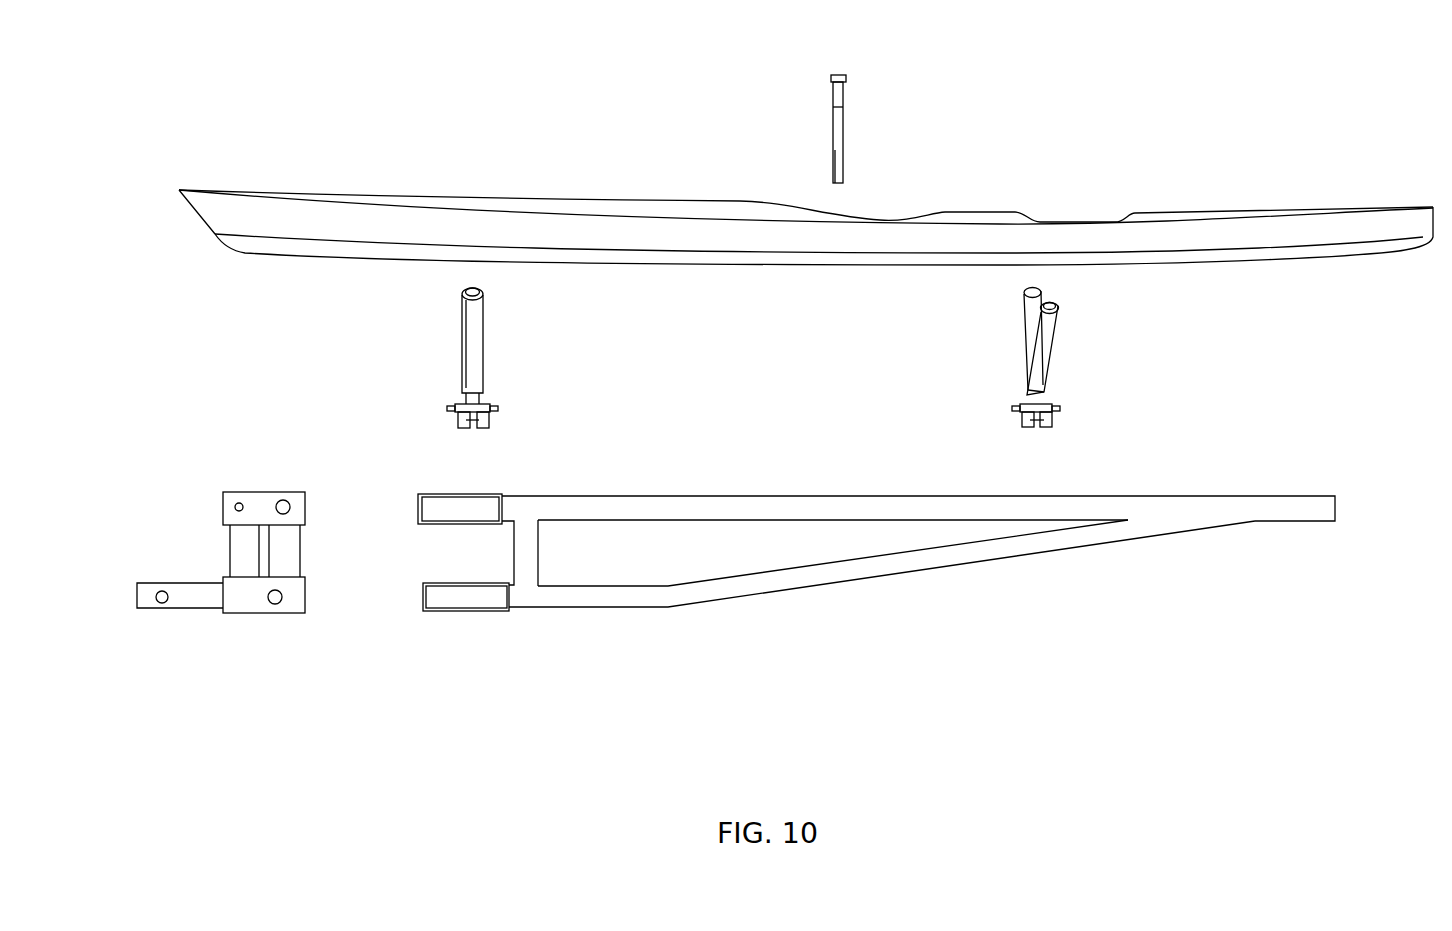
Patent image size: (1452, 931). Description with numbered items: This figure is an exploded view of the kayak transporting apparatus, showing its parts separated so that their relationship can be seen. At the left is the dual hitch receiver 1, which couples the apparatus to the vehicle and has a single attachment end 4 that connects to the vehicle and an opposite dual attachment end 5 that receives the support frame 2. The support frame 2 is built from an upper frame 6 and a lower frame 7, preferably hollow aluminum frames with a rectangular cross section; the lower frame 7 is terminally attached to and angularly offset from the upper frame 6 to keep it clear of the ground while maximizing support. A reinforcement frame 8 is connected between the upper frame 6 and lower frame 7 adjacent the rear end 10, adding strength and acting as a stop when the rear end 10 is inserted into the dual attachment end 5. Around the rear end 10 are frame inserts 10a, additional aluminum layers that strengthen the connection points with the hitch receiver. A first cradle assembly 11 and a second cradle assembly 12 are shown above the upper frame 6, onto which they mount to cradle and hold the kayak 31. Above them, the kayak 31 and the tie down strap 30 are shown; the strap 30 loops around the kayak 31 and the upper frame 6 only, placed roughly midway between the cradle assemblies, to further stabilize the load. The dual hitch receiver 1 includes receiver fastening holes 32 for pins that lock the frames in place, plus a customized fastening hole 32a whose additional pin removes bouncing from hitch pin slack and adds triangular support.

The dual hitch receiver 1 is at (210, 600).
The support frame 2 is at (851, 542).
The single attachment end 4 is at (166, 574).
The dual attachment end 5 is at (241, 564).
The upper frame 6 is at (847, 510).
The lower frame 7 is at (797, 578).
The reinforcement frame 8 is at (523, 570).
The rear end 10 is at (439, 642).
The frame inserts 10a is at (438, 494).
The first cradle assembly 11 is at (1123, 369).
The second cradle assembly 12 is at (518, 360).
The tie down strap 30 is at (834, 81).
The kayak 31 is at (1242, 224).
The receiver fastening holes 32 is at (277, 603).
The customized fastening hole 32a is at (238, 500).